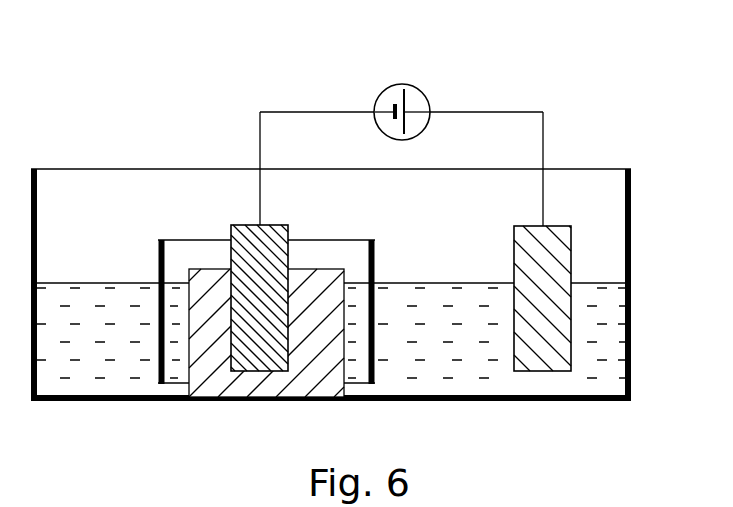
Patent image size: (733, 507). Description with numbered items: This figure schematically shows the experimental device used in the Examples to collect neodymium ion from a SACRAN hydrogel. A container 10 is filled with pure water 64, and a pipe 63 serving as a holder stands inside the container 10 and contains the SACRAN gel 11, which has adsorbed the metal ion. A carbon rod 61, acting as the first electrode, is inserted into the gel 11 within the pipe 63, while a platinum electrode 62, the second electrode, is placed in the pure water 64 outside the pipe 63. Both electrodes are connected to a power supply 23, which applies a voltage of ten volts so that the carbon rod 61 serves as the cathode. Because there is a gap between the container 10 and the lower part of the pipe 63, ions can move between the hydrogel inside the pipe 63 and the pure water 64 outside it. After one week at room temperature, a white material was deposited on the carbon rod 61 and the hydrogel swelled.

The container 10 is at (631, 197).
The SACRAN gel 11 is at (318, 277).
The power supply 23 is at (419, 86).
The carbon rod 61 is at (275, 225).
The platinum electrode 62 is at (557, 232).
The pipe 63 is at (377, 253).
The pure water 64 is at (85, 292).